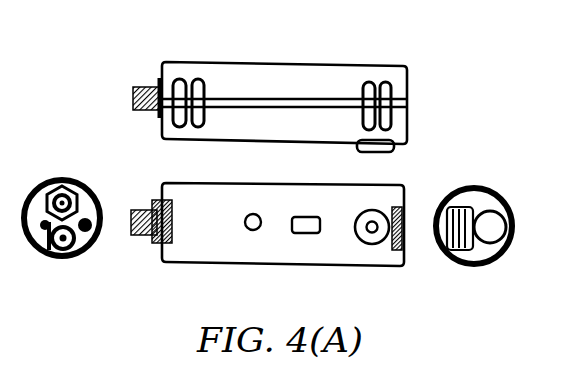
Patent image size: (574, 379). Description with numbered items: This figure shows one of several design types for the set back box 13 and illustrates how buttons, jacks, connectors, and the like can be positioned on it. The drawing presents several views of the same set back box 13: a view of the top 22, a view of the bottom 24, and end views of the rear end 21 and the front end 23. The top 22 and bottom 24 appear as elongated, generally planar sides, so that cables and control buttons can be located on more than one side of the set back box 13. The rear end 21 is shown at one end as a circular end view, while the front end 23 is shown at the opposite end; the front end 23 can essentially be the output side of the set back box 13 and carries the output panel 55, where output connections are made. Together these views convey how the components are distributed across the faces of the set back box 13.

The set back box 13 is at (303, 76).
The rear end 21 is at (57, 177).
The top 22 is at (270, 247).
The front end 23 is at (474, 186).
The bottom 24 is at (267, 77).
The output panel 55 is at (457, 260).